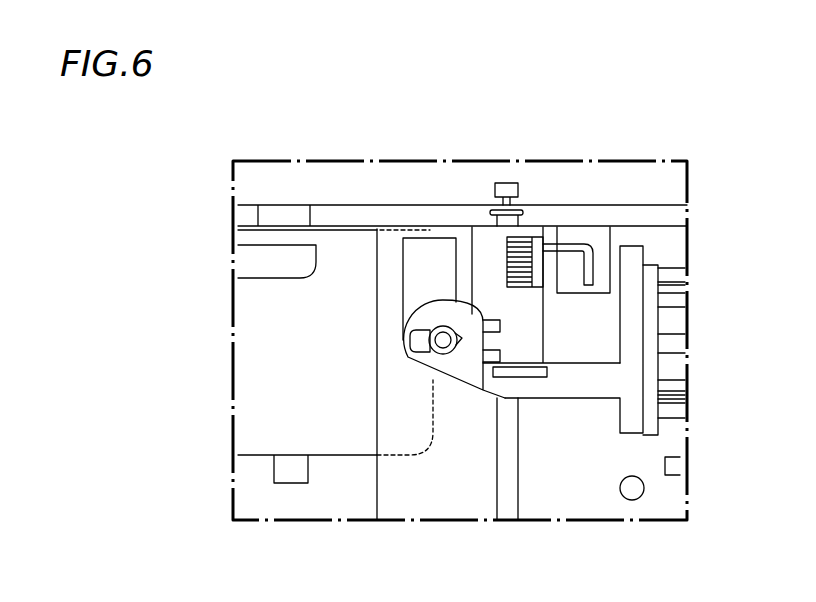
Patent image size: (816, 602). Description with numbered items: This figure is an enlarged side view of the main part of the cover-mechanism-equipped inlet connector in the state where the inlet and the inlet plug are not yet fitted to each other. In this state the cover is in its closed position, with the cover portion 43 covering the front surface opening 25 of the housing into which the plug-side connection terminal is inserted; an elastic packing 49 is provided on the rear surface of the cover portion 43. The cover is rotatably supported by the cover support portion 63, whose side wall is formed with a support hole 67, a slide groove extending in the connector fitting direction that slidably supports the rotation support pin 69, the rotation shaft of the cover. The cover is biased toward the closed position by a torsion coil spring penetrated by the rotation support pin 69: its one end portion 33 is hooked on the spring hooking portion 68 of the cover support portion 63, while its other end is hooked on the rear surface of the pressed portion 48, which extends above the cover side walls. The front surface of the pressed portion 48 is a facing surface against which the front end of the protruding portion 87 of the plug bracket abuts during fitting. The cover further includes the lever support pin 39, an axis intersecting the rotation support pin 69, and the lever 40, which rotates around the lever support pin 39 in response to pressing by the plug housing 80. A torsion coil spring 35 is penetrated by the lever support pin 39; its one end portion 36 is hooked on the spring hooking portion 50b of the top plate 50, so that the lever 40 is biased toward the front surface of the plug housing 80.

The front surface opening 25 is at (670, 322).
The one end portion of the torsion coil spring 33 is at (515, 362).
The torsion coil spring 35 is at (537, 260).
The one end portion of the torsion coil spring 36 is at (593, 265).
The lever support pin 39 is at (505, 183).
The lever 40 is at (490, 247).
The cover portion 43 is at (630, 418).
The pressed portion 48 is at (435, 258).
The elastic packing 49 is at (650, 425).
The top plate 50 is at (333, 215).
The spring hooking portion 50b is at (573, 233).
The cover support portion 63 is at (417, 492).
The support hole 67 is at (418, 340).
The spring hooking portion 68 is at (543, 370).
The rotation support pin 69 is at (448, 345).
The plug housing 80 is at (339, 428).
The protruding portion 87 is at (292, 262).